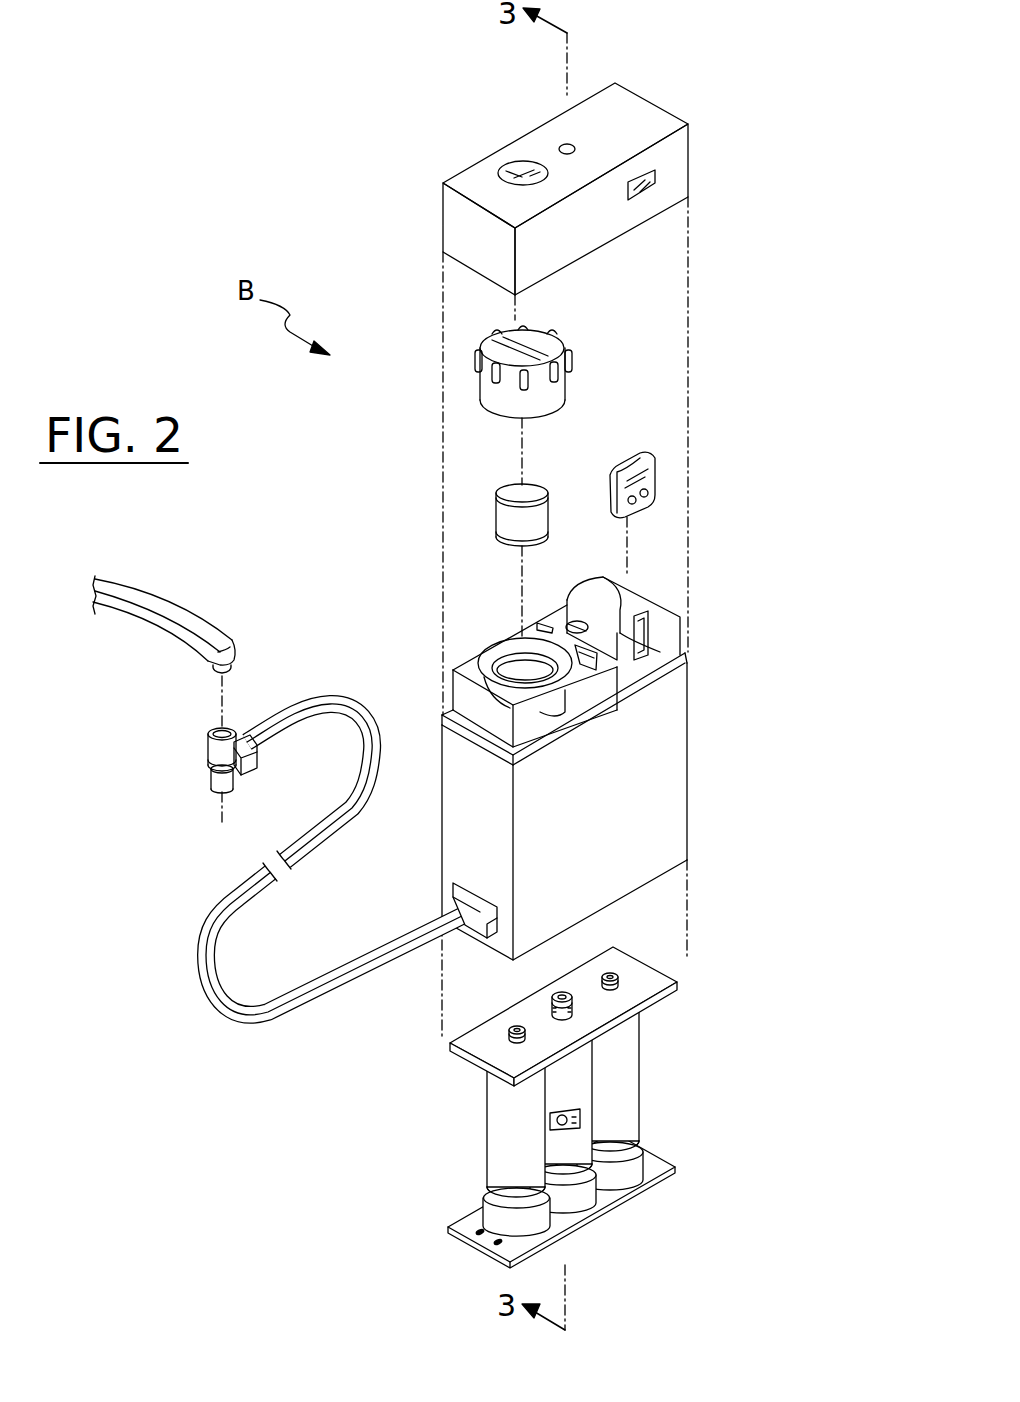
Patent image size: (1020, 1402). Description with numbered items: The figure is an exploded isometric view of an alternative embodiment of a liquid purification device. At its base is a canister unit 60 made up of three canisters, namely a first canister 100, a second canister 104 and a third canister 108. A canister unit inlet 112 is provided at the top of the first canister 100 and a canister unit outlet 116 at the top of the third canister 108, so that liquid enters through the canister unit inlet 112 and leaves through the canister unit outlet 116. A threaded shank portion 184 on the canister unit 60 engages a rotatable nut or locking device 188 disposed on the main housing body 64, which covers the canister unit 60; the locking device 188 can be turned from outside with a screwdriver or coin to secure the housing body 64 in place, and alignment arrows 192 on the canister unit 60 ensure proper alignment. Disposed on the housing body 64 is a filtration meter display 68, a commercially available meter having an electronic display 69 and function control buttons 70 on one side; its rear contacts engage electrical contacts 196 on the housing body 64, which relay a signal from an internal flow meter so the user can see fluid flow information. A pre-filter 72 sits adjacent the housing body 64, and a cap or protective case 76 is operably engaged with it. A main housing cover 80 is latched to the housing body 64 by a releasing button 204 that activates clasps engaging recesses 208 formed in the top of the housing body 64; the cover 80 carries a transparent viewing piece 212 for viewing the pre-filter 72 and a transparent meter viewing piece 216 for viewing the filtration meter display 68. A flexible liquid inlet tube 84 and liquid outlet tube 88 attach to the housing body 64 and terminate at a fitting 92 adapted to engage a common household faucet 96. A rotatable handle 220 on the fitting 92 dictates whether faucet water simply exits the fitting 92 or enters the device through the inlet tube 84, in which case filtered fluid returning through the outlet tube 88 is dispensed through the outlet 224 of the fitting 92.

The main housing cover 80 is at (690, 155).
The releasing button 204 is at (566, 145).
The viewing piece 212 is at (510, 163).
The meter viewing piece 216 is at (650, 188).
The cap or protective case 76 is at (565, 365).
The pre-filter 72 is at (497, 527).
The electronic display 69 is at (642, 472).
The filtration meter display 68 is at (655, 480).
The function control buttons 70 is at (642, 497).
The main housing body 64 is at (688, 745).
The electrical contacts 196 is at (648, 628).
The locking device 188 is at (575, 620).
The recesses 208 is at (600, 658).
The household faucet 96 is at (185, 608).
The fitting 92 is at (208, 753).
The handle 220 is at (212, 782).
The outlet 224 is at (257, 770).
The liquid outlet tube 88 is at (340, 1000).
The liquid inlet tube 84 is at (372, 950).
The alignment arrows 192 is at (497, 1243).
The first canister 100 is at (497, 1147).
The second canister 104 is at (582, 1085).
The third canister 108 is at (637, 1105).
The canister unit 60 is at (692, 990).
The canister unit outlet 116 is at (617, 970).
The threaded shank portion 184 is at (573, 1001).
The canister unit inlet 112 is at (513, 1040).